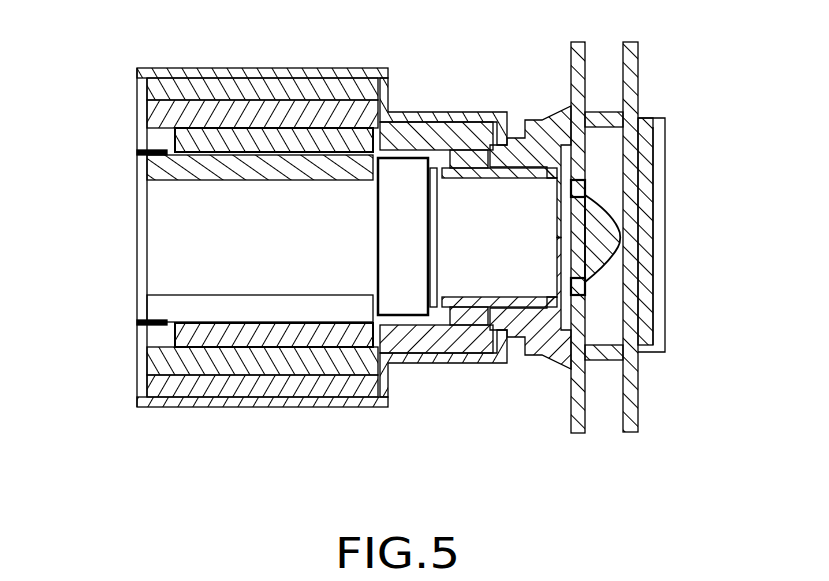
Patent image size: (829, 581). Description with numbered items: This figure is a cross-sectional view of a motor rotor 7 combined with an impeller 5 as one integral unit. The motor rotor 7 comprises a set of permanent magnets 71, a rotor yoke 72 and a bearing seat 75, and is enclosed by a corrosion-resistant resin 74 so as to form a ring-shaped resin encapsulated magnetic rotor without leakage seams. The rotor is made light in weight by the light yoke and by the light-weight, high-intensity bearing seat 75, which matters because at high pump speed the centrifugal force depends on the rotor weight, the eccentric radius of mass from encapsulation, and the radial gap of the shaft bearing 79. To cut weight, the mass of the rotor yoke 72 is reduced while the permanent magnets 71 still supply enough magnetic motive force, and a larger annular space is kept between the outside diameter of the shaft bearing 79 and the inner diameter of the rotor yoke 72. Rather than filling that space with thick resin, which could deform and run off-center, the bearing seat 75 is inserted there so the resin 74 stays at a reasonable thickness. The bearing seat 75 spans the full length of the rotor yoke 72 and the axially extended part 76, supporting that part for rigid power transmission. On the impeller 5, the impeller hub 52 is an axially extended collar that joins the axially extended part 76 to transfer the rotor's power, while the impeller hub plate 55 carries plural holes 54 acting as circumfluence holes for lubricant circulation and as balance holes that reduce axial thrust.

The impeller 5 is at (661, 269).
The motor rotor 7 is at (322, 248).
The impeller hub 52 is at (550, 350).
The holes 54 is at (588, 181).
The impeller hub plate 55 is at (619, 240).
The permanent magnets 71 is at (185, 383).
The rotor yoke 72 is at (237, 383).
The corrosion-resistant resin 74 is at (192, 72).
The bearing seat 75 is at (462, 340).
The axially extended part 76 is at (467, 122).
The shaft bearing 79 is at (146, 323).